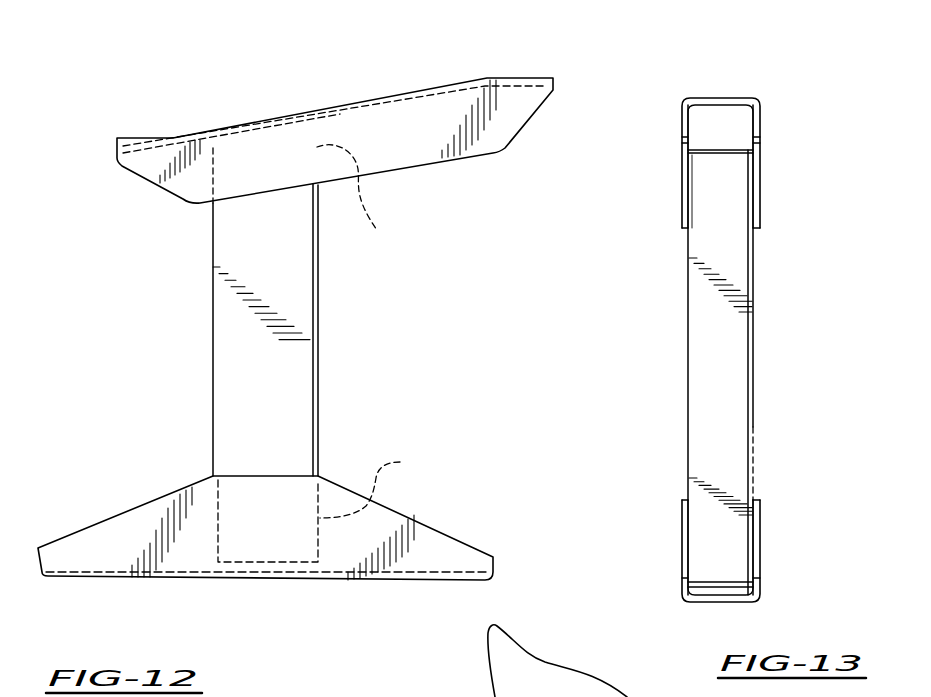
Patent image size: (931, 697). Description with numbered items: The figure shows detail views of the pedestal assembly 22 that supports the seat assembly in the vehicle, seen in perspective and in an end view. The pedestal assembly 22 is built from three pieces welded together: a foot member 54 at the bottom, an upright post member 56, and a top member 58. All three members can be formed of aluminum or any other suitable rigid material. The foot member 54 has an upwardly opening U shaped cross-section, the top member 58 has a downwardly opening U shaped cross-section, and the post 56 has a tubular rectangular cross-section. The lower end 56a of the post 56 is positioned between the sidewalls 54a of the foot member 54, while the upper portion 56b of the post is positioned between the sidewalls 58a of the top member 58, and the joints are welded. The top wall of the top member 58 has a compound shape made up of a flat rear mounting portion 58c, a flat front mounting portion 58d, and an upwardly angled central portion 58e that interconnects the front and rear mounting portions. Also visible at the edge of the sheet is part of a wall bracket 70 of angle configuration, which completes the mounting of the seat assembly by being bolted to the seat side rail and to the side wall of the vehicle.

In FIG. 12, the pedestal assembly 22 is at (208, 270).
In FIG. 13, the pedestal assembly 22 is at (676, 310).
In FIG. 12, the foot member 54 is at (143, 505).
In FIG. 13, the sidewalls 54a is at (682, 538).
In FIG. 12, the post member 56 is at (320, 348).
In FIG. 13, the post member 56 is at (742, 403).
In FIG. 12, the lower end 56a is at (384, 485).
In FIG. 13, the lower end 56a is at (733, 522).
In FIG. 12, the upper portion 56b is at (368, 191).
In FIG. 13, the upper portion 56b is at (742, 202).
In FIG. 12, the top member 58 is at (344, 104).
In FIG. 13, the top member 58 is at (720, 97).
In FIG. 12, the sidewalls 58a is at (330, 111).
In FIG. 13, the sidewalls 58a is at (762, 167).
In FIG. 12, the flat rear mounting portion 58c is at (143, 137).
In FIG. 12, the flat front mounting portion 58d is at (540, 78).
In FIG. 12, the upwardly angled central portion 58e is at (462, 80).
In FIG. 13, the wall bracket 70 is at (645, 696).